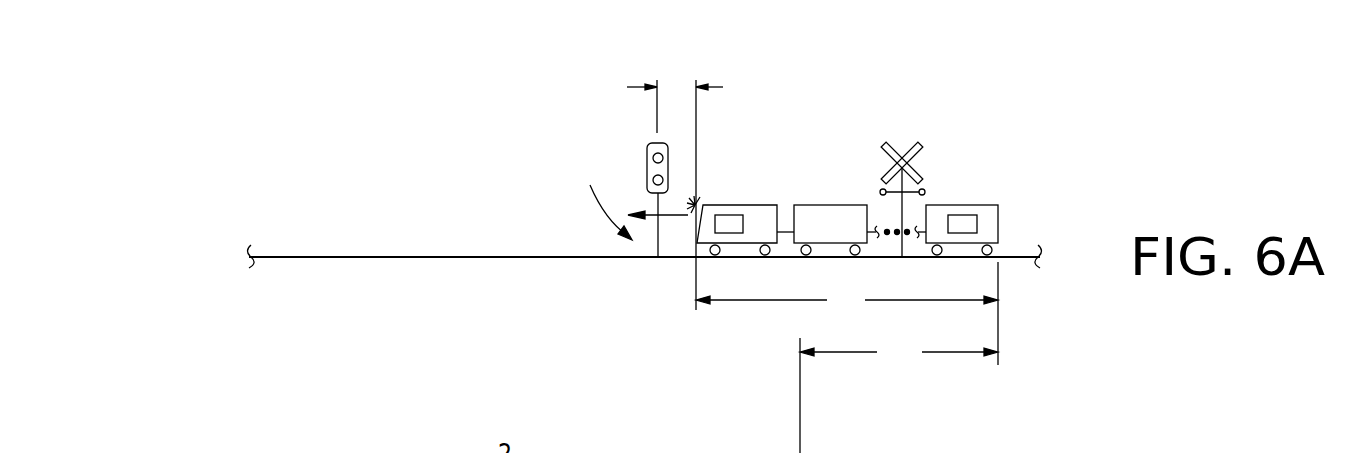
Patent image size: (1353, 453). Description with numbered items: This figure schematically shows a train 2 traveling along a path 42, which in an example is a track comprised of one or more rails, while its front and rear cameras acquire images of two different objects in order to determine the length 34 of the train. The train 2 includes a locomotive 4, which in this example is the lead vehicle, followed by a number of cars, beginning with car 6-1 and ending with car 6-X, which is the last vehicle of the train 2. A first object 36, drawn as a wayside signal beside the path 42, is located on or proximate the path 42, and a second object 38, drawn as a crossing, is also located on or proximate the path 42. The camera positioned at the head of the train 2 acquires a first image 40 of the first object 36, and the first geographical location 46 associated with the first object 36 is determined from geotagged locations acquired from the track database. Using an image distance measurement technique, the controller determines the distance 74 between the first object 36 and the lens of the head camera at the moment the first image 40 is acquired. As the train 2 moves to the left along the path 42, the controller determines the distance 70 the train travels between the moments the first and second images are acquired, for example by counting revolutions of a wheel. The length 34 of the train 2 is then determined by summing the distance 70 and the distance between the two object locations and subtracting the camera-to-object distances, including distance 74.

The train 2 is at (873, 112).
The locomotive 4 is at (747, 205).
The car 6-1 is at (830, 205).
The car 6-X is at (955, 205).
The length of train 34 is at (847, 313).
The first object 36 is at (648, 147).
The second object 38 is at (921, 142).
The first image 40 is at (697, 202).
The path 42 is at (328, 257).
The first geographical location 46 is at (603, 197).
The distance 70 is at (899, 395).
The distance 74 is at (718, 83).